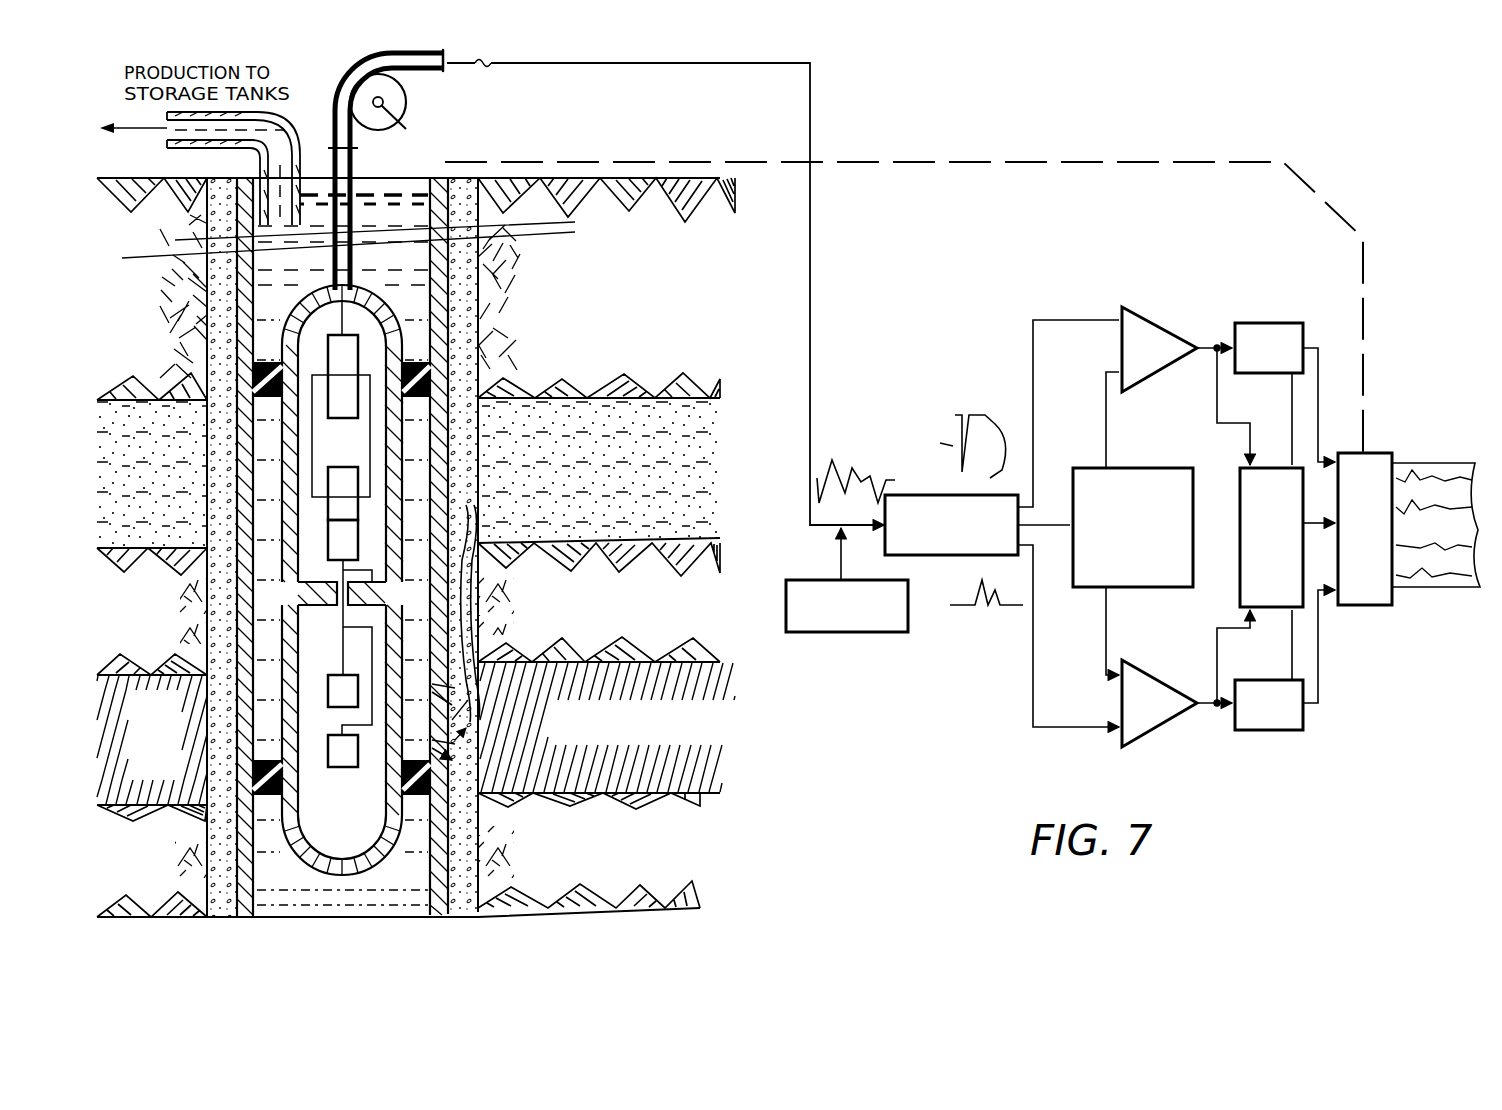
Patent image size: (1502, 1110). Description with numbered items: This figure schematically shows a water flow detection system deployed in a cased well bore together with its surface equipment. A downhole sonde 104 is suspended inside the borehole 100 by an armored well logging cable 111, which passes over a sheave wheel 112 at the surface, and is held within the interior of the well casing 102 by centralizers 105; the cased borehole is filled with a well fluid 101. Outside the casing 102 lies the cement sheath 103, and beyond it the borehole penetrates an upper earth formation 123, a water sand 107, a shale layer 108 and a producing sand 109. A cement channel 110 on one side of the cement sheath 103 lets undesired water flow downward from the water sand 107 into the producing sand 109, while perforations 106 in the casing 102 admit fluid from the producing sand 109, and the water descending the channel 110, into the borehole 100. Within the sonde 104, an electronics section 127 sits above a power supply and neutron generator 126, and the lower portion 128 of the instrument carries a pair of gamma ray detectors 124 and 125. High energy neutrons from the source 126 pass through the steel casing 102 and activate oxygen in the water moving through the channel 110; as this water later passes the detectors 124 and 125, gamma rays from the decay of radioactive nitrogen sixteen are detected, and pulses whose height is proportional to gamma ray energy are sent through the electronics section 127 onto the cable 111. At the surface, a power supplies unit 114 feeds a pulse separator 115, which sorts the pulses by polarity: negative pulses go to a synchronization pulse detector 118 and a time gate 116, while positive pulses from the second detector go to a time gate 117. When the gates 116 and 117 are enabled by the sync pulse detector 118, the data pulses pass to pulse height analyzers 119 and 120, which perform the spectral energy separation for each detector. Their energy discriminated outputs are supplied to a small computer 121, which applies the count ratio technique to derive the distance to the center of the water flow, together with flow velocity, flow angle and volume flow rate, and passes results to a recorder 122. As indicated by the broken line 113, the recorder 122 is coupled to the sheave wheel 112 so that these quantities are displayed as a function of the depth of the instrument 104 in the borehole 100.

The well borehole 100 is at (334, 500).
The well fluid 101 is at (405, 273).
The well casing 102 is at (445, 290).
The cement sheath 103 is at (215, 216).
The downhole sonde 104 is at (398, 480).
The centralizers 105 is at (417, 360).
The perforations 106 is at (452, 683).
The water sand 107 is at (142, 492).
The shale layer 108 is at (138, 612).
The producing sand 109 is at (157, 777).
The cement channel 110 is at (478, 595).
The armored well logging cable 111 is at (353, 168).
The sheave wheel 112 is at (407, 103).
The broken line 113 is at (946, 162).
The power supplies 114 is at (860, 633).
The pulse separator 115 is at (896, 495).
The time gate 116 is at (1160, 323).
The time gate 117 is at (1170, 727).
The synchronization pulse detector 118 is at (1143, 468).
The pulse height analyzer 119 is at (1270, 323).
The pulse height analyzer 120 is at (1280, 730).
The small computer 121 is at (1240, 468).
The recorder 122 is at (1378, 453).
The earth formation 123 is at (142, 320).
The gamma ray detector 124 is at (328, 693).
The gamma ray detector 125 is at (328, 747).
The power supply and neutron generator 126 is at (328, 497).
The electronics section 127 is at (323, 348).
The lower tool section 128 is at (317, 608).